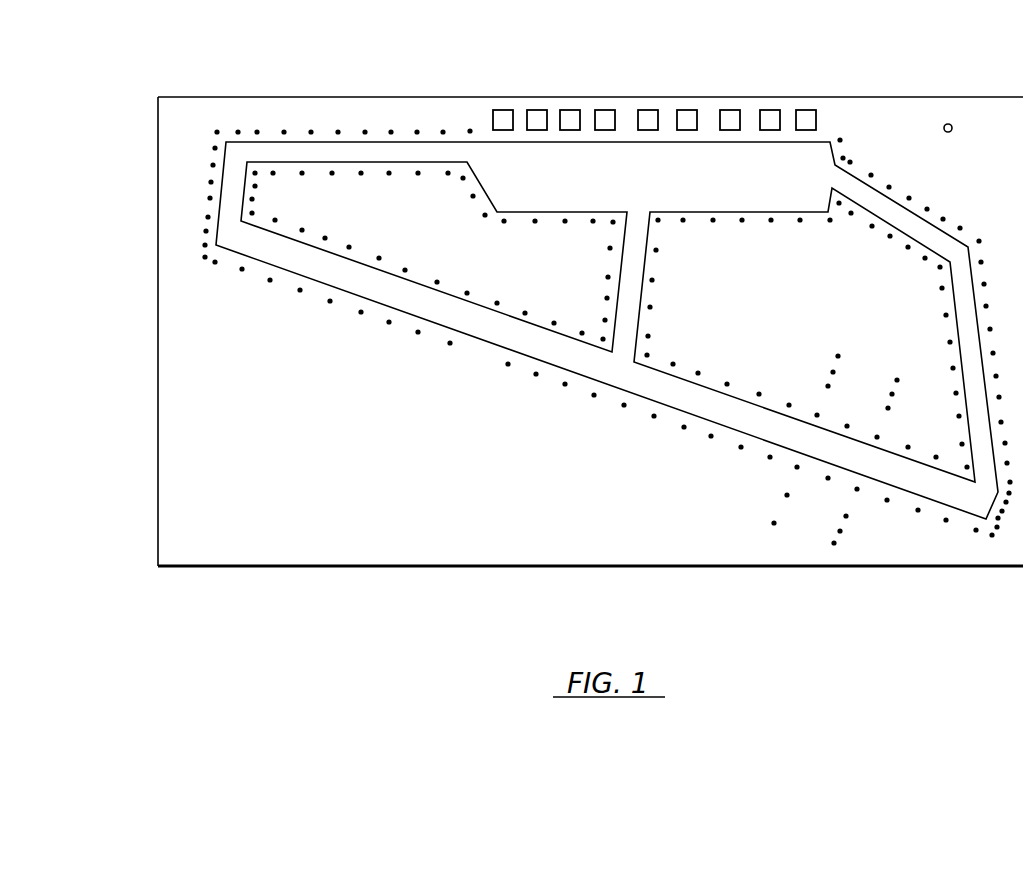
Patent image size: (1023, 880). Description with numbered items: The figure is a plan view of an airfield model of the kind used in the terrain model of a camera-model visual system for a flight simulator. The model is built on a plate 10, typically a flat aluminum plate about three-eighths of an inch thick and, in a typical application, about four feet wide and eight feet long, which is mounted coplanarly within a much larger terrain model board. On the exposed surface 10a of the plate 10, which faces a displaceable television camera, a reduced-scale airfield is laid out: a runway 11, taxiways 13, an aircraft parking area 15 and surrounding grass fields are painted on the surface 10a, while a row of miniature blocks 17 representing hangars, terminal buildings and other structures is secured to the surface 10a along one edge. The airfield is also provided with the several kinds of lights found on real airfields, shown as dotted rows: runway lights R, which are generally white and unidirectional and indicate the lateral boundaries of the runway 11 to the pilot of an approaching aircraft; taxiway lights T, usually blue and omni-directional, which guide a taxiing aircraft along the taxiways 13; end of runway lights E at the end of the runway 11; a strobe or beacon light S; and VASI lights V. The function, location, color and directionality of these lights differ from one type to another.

The plate 10 is at (397, 567).
The exposed surface 10a is at (283, 514).
The runway 11 is at (604, 370).
The taxiways 13 is at (243, 212).
The aircraft parking area 15 is at (607, 180).
The miniature blocks 17 is at (732, 113).
The end of runway lights E is at (205, 231).
The runway lights R is at (480, 352).
The strobe or beacon lights S is at (951, 124).
The taxiway lights T is at (656, 278).
The VASI lights V is at (781, 510).